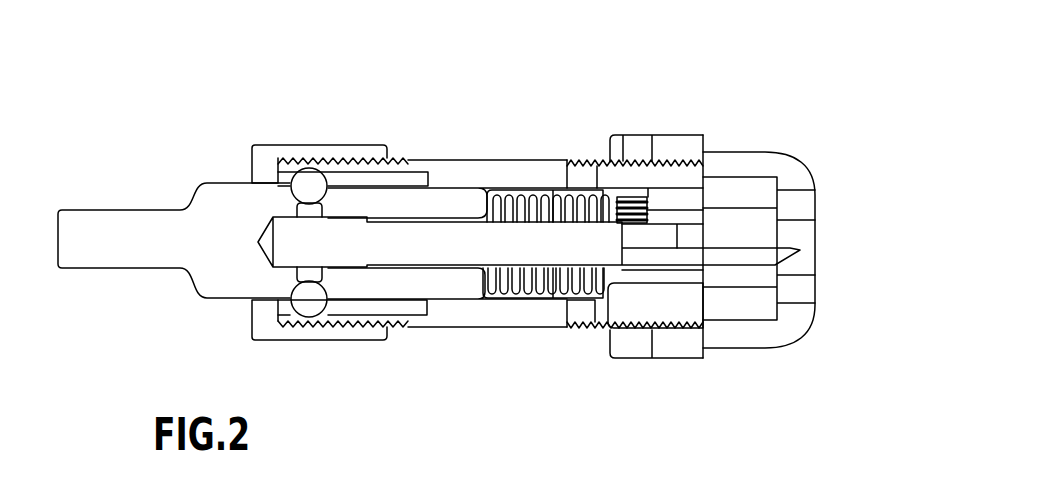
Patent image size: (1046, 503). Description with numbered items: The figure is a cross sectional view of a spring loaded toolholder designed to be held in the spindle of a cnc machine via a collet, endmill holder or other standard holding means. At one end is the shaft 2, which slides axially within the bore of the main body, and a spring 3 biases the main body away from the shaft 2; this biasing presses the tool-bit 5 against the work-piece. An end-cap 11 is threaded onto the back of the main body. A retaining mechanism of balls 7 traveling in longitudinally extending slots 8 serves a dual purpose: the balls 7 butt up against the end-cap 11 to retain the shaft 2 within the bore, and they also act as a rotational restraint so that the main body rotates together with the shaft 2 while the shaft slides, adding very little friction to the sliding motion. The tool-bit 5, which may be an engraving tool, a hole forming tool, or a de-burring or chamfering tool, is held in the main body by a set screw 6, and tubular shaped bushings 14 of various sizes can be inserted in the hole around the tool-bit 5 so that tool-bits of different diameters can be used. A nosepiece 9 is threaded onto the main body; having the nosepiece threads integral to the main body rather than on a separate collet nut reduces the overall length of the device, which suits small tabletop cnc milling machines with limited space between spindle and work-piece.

The shaft 2 is at (98, 223).
The end-cap 11 is at (265, 153).
The balls 7 is at (313, 180).
The slots 8 is at (407, 177).
The spring 3 is at (540, 297).
The set screw 6 is at (643, 195).
The tool-bit 5 is at (750, 257).
The tubular shaped bushings 14 is at (693, 276).
The nosepiece 9 is at (792, 173).